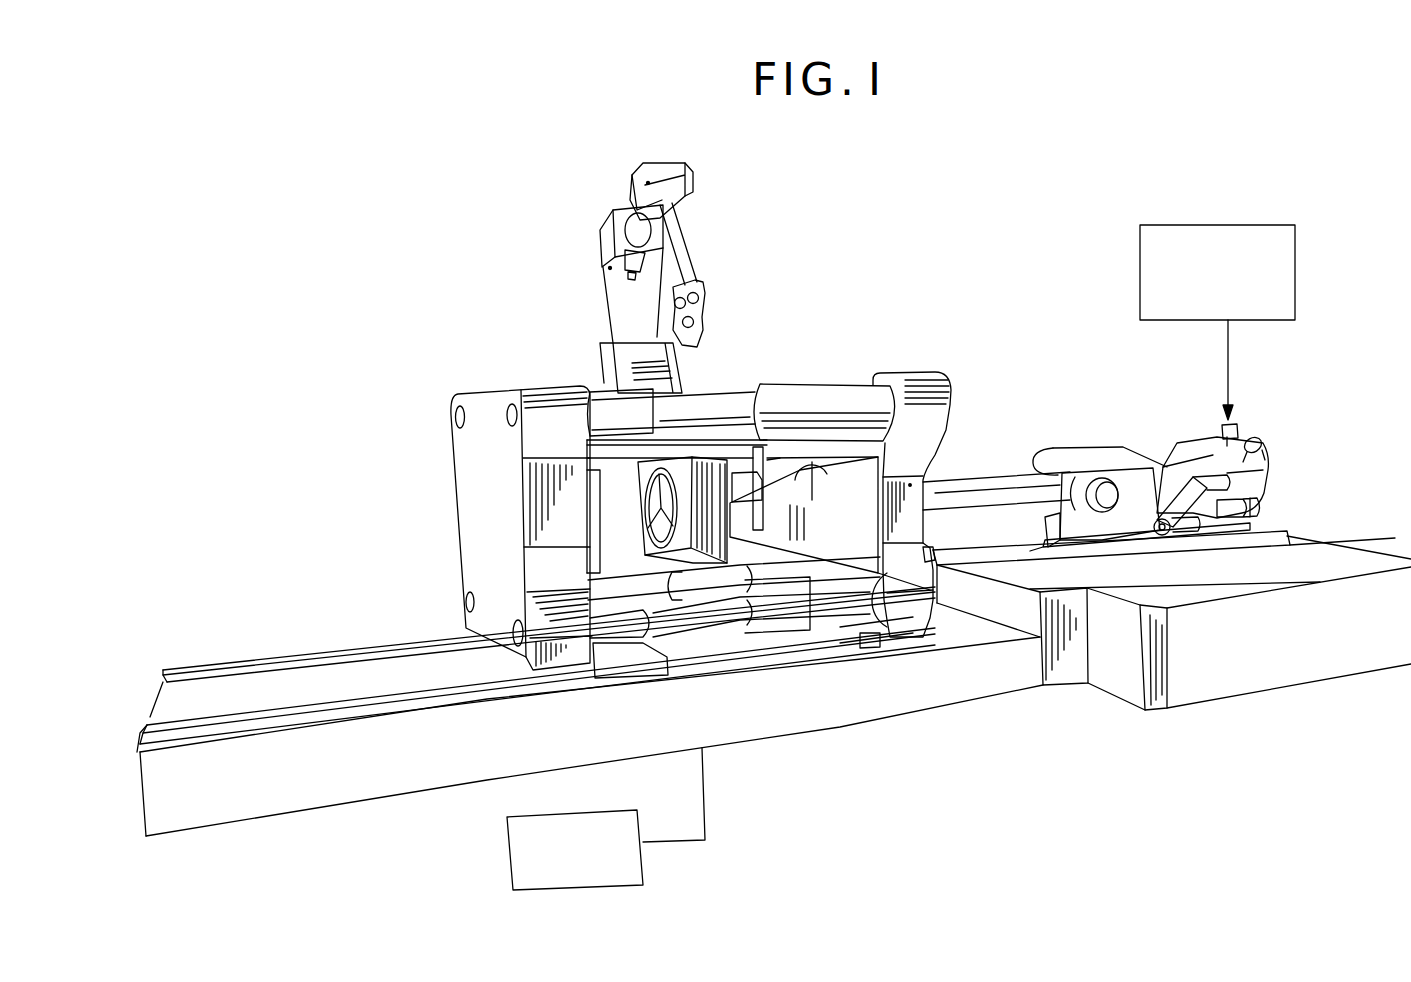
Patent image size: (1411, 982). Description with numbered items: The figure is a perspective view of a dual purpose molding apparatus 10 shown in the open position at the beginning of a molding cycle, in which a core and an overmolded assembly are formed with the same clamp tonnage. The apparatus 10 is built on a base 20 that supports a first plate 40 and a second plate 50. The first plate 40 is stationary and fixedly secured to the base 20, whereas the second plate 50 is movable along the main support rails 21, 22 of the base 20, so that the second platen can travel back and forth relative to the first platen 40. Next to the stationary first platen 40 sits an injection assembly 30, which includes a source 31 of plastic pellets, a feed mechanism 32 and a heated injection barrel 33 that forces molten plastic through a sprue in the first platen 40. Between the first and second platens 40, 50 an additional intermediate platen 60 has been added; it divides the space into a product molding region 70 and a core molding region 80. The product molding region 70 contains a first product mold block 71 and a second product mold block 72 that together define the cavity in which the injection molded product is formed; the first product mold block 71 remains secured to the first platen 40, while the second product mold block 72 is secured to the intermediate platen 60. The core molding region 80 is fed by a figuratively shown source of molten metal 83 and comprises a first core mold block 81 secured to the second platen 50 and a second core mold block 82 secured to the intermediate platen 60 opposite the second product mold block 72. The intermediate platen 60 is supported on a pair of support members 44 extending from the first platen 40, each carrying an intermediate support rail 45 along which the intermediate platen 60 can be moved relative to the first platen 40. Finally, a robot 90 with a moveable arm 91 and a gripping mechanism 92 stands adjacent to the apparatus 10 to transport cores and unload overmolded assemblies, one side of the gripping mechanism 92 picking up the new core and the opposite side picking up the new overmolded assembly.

The dual purpose molding apparatus 10 is at (1237, 180).
The base 20 is at (373, 772).
The main support rail 21 is at (243, 663).
The main support rail 22 is at (340, 703).
The injection assembly 30 is at (1079, 384).
The source of plastic pellets 31 is at (1217, 322).
The feed mechanism 32 is at (1165, 458).
The heated injection barrel 33 is at (985, 490).
The first plate 40 is at (917, 383).
The support member 44 is at (850, 552).
The intermediate support rail 45 is at (804, 515).
The second plate 50 is at (498, 458).
The intermediate platen 60 is at (828, 440).
The product molding region 70 is at (827, 588).
The first product mold block 71 is at (823, 478).
The second product mold block 72 is at (772, 468).
The core molding region 80 is at (618, 575).
The first core mold block 81 is at (600, 403).
The second core mold block 82 is at (685, 545).
The source of molten metal 83 is at (505, 846).
The robot 90 is at (692, 158).
The moveable arm 91 is at (690, 253).
The gripping mechanism 92 is at (712, 312).